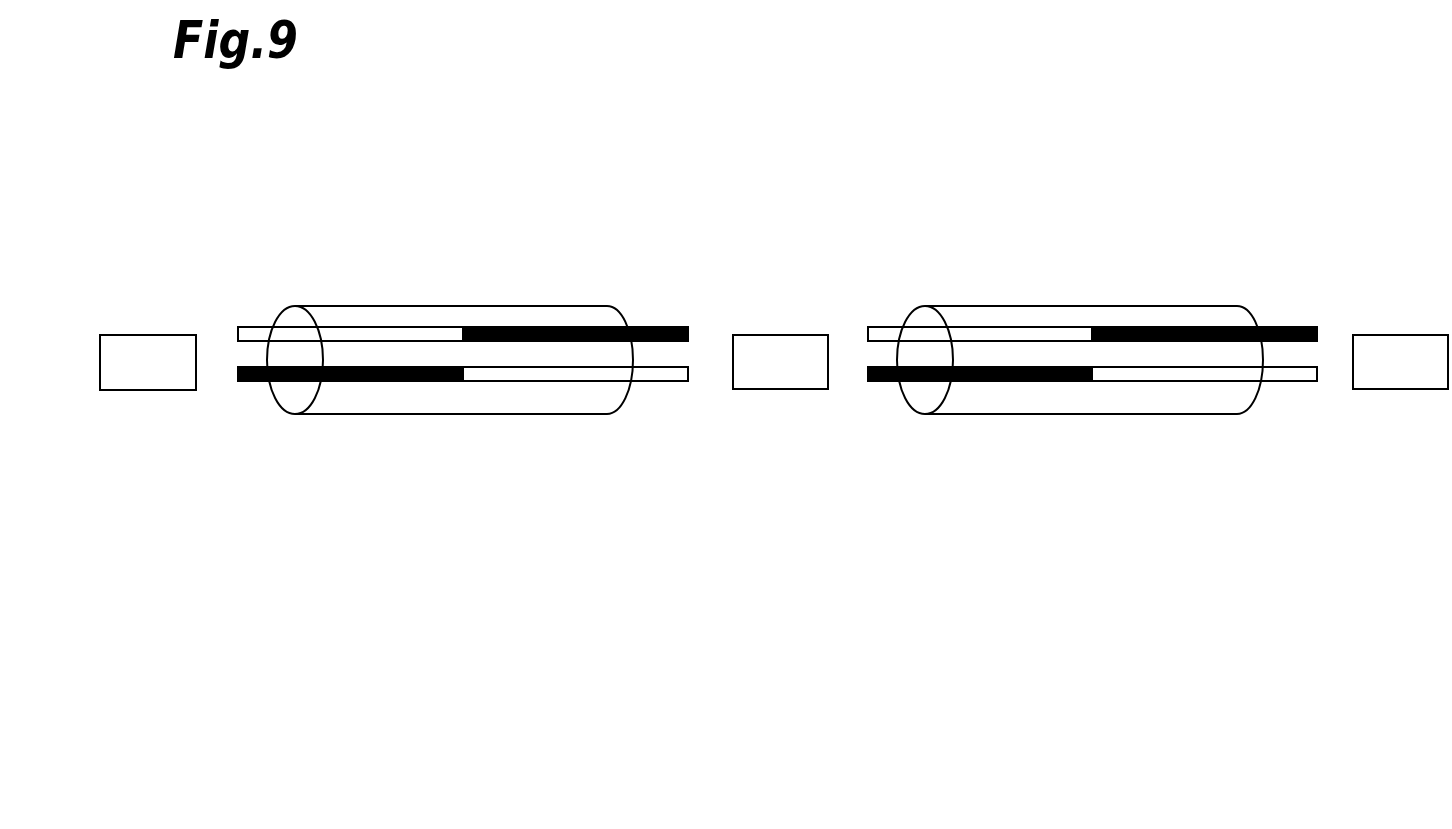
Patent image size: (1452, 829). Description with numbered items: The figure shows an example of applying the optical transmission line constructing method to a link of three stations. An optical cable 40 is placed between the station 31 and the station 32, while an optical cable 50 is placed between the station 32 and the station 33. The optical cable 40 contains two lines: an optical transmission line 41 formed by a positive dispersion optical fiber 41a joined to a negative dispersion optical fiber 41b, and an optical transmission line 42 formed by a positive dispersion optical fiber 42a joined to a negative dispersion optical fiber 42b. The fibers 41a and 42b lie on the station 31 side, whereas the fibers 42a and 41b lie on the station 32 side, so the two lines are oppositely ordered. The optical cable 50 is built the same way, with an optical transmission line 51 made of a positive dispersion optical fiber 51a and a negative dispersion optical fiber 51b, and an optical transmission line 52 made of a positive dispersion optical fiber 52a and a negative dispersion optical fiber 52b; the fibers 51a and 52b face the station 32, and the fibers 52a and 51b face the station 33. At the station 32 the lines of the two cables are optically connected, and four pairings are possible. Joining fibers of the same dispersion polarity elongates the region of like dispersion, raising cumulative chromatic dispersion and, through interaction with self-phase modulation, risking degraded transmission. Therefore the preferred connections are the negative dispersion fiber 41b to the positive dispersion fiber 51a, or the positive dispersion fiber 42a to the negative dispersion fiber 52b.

The station 31 is at (145, 390).
The station 32 is at (775, 389).
The station 33 is at (1398, 389).
The optical cable 40 is at (318, 305).
The optical transmission line 41 is at (463, 269).
The positive dispersion optical fiber 41a is at (431, 327).
The negative dispersion optical fiber 41b is at (575, 293).
The optical transmission line 42 is at (463, 443).
The positive dispersion optical fiber 42a is at (575, 417).
The negative dispersion optical fiber 42b is at (418, 382).
The optical cable 50 is at (960, 305).
The optical transmission line 51 is at (1092, 269).
The positive dispersion optical fiber 51a is at (1071, 327).
The negative dispersion optical fiber 51b is at (1204, 293).
The optical transmission line 52 is at (1092, 443).
The positive dispersion optical fiber 52a is at (1204, 417).
The negative dispersion optical fiber 52b is at (1065, 382).